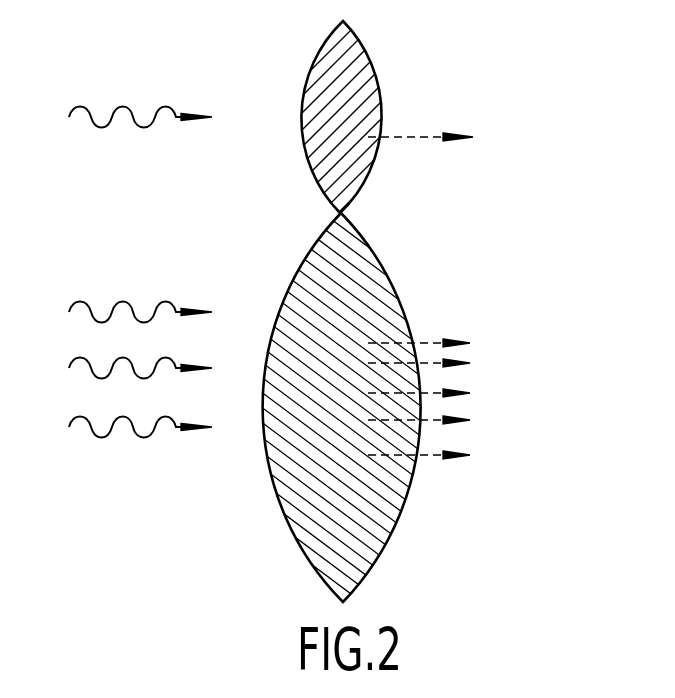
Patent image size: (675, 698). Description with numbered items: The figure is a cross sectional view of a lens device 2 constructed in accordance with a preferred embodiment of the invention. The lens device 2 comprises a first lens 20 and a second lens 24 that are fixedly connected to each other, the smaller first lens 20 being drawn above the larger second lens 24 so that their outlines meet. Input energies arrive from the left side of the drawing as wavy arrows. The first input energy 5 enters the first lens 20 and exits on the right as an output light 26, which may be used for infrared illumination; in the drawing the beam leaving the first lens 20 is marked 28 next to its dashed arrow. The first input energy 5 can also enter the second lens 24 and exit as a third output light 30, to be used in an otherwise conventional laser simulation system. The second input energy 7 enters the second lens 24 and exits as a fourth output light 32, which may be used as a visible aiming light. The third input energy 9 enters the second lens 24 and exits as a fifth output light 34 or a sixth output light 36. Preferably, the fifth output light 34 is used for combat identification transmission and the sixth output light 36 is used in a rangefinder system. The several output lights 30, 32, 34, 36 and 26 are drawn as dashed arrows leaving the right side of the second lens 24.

The lens device 2 is at (426, 349).
The first input energy 5 is at (127, 214).
The second input energy 7 is at (127, 367).
The third input energy 9 is at (127, 427).
The first lens 20 is at (360, 40).
The second lens 24 is at (387, 538).
The output light 26 is at (436, 453).
The output beam 28 is at (435, 137).
The third output light 30 is at (432, 344).
The fourth output light 32 is at (437, 360).
The fifth output light 34 is at (436, 391).
The sixth output light 36 is at (436, 417).